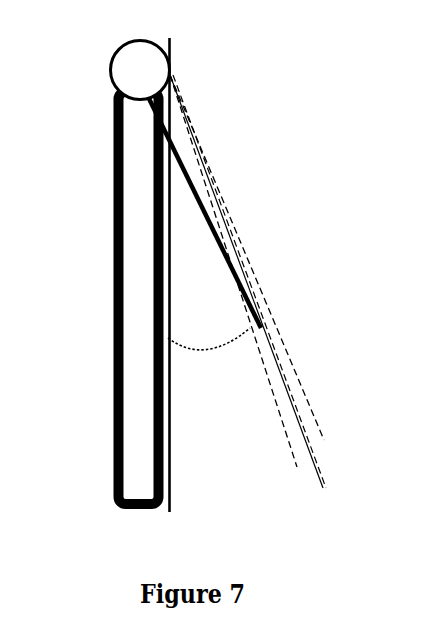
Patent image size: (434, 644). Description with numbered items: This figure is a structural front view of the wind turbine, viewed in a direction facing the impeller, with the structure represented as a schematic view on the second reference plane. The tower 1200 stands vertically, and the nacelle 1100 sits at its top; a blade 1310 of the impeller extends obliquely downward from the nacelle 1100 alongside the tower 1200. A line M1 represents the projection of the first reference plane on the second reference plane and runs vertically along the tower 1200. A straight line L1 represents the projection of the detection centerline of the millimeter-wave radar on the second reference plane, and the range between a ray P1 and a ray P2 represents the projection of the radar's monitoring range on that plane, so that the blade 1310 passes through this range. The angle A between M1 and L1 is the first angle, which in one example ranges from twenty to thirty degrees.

The nacelle 1100 is at (112, 58).
The tower 1200 is at (110, 175).
The blade 1310 is at (205, 218).
The projection of the first reference plane M1 is at (180, 283).
The ray P1 is at (238, 284).
The ray P2 is at (262, 270).
The straight line L1 is at (257, 295).
The angle A is at (209, 335).